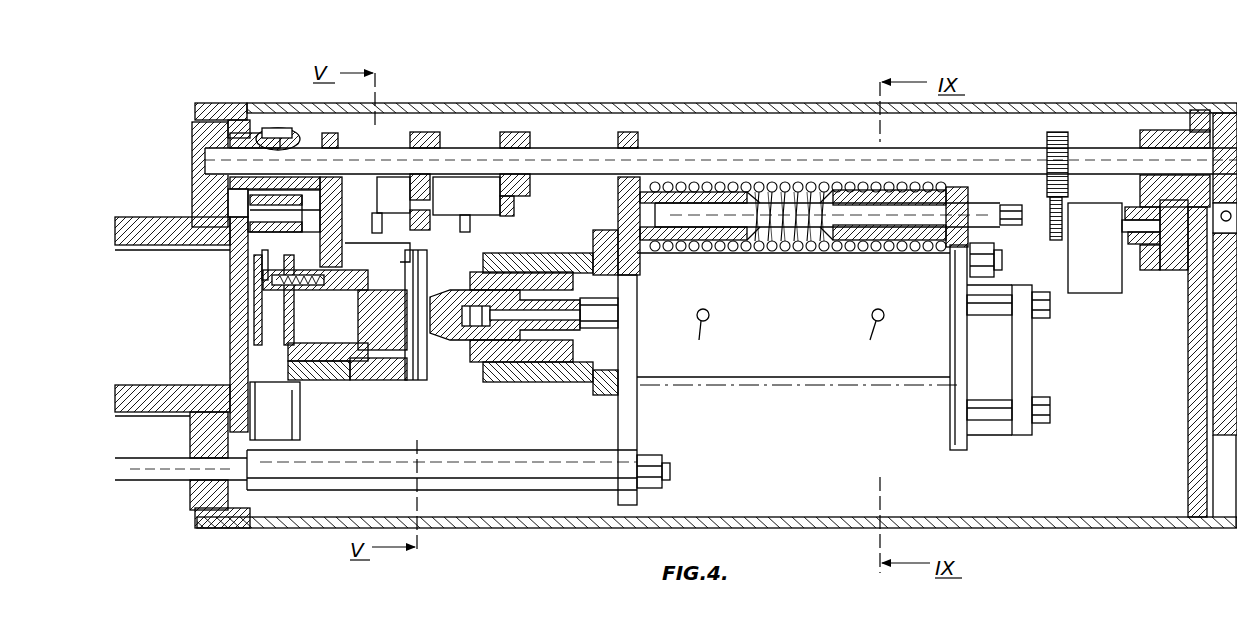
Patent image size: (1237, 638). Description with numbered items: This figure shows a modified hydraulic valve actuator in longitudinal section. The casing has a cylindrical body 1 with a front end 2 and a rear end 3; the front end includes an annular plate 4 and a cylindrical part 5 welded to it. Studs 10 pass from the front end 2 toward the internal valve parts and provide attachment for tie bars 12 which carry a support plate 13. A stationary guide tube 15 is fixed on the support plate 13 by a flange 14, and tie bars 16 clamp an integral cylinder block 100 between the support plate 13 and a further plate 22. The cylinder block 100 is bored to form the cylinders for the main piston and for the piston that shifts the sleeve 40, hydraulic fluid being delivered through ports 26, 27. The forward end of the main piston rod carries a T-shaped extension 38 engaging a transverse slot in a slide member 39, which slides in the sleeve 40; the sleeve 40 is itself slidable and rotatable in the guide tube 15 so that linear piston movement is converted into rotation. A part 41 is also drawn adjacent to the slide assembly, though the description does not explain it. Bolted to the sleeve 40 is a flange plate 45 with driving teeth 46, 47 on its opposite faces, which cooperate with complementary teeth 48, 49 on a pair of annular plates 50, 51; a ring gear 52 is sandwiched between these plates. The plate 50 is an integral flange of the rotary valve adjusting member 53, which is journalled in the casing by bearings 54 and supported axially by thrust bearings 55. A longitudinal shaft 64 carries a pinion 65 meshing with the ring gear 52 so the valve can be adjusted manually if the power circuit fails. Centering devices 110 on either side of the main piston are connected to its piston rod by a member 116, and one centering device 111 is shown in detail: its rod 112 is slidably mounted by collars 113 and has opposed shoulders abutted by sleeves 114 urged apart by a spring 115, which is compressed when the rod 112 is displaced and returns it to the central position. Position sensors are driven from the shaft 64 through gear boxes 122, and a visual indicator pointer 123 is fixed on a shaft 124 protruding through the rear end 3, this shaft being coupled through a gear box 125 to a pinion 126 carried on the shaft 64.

The cylindrical body 1 is at (653, 103).
The front end 2 is at (236, 103).
The rear end 3 is at (1190, 358).
The annular plate 4 is at (192, 137).
The cylindrical part 5 is at (180, 230).
The studs 10 is at (167, 480).
The tie bars 12 is at (367, 472).
The support plate 13 is at (627, 472).
The flange 14 is at (597, 387).
The stationary guide tube 15 is at (533, 372).
The tie bars 16 is at (1000, 260).
The plate 22 is at (958, 428).
The port 26 is at (694, 336).
The port 27 is at (870, 336).
The extension 38 is at (500, 327).
The slide member 39 is at (458, 333).
The sleeve 40 is at (548, 357).
The partition plate 41 is at (414, 380).
The flange plate 45 is at (284, 297).
The driving teeth 46 is at (260, 287).
The driving teeth 47 is at (315, 206).
The complementary teeth 48 is at (232, 292).
The complementary teeth 49 is at (310, 282).
The annular plate 50 is at (230, 352).
The annular plate 51 is at (333, 293).
The ring gear 52 is at (240, 200).
The rotary valve adjusting member 53 is at (190, 337).
The bearings 54 is at (172, 349).
The thrust bearings 55 is at (185, 251).
The shaft 64 is at (798, 154).
The pinion 65 is at (282, 140).
The cylinder block 100 is at (780, 347).
The centering devices 110 is at (825, 452).
The centering device 111 is at (851, 252).
The rod 112 is at (790, 243).
The collars 113 is at (648, 245).
The sleeves 114 is at (712, 244).
The spring 115 is at (767, 243).
The member 116 is at (1020, 382).
The gear boxes 122 is at (388, 180).
The pointer 123 is at (1217, 393).
The shaft 124 is at (1188, 262).
The gear box 125 is at (1097, 268).
The pinion 126 is at (1046, 140).